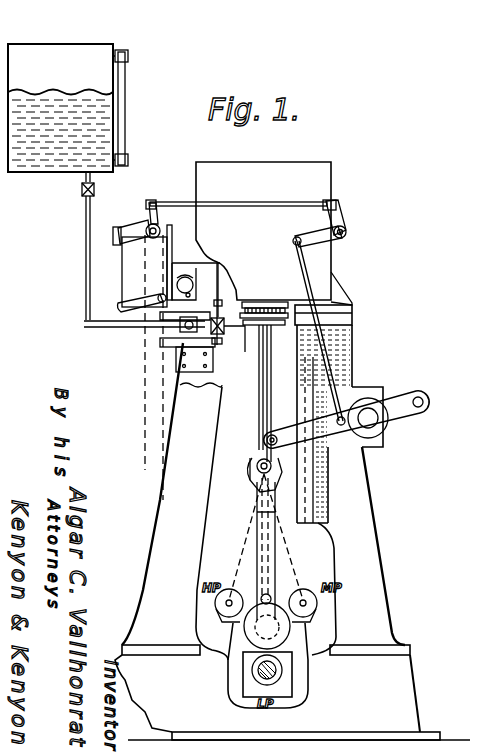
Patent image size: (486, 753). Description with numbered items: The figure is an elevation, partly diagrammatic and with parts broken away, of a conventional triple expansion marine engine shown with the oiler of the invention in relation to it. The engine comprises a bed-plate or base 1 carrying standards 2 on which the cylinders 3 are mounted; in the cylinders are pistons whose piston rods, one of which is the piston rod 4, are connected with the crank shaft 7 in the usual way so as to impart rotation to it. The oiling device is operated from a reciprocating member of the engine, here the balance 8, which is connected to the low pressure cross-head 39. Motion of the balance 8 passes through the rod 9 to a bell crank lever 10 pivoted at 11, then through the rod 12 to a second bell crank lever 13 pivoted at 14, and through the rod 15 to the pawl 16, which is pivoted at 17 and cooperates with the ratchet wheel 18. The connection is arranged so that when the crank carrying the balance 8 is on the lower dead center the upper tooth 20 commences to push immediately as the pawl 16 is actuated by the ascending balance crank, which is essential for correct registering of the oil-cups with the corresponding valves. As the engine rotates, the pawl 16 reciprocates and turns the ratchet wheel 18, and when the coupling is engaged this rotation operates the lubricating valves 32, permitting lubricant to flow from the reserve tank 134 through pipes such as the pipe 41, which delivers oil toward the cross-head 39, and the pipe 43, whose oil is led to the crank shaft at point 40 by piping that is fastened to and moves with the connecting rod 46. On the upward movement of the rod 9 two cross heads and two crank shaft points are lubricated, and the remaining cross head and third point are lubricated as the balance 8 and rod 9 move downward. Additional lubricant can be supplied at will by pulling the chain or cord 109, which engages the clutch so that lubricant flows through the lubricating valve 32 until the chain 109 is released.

The bed-plate 1 is at (403, 690).
The standards 2 is at (368, 563).
The cylinders 3 is at (320, 188).
The piston rod 4 is at (270, 390).
The crank shaft 7 is at (286, 680).
The balance 8 is at (396, 408).
The rod 9 is at (330, 366).
The bell crank lever 10 is at (341, 219).
The pivot 11 is at (347, 234).
The rod 12 is at (244, 204).
The bell crank lever 13 is at (153, 204).
The pivot 14 is at (160, 229).
The rod 15 is at (124, 270).
The pawl 16 is at (136, 313).
The pivot 17 is at (160, 303).
The ratchet wheel 18 is at (200, 296).
The upper tooth 20 is at (181, 287).
The lubricating valve 32 is at (225, 329).
The low pressure cross-head 39 is at (258, 470).
The crank shaft lubrication point 40 is at (250, 681).
The pipe 41 is at (268, 356).
The pipe 43 is at (245, 353).
The connecting rod 46 is at (258, 541).
The chain 109 is at (146, 404).
The reserve tank 134 is at (86, 148).